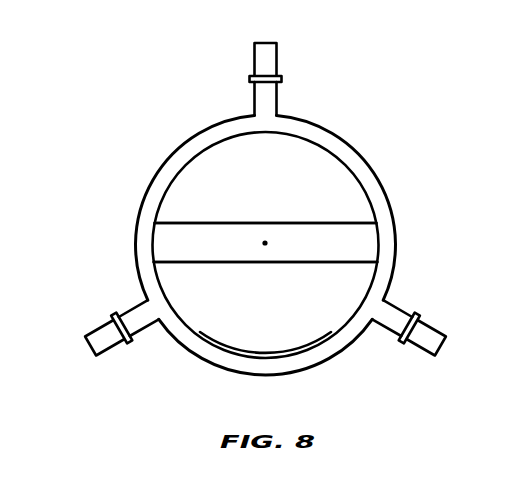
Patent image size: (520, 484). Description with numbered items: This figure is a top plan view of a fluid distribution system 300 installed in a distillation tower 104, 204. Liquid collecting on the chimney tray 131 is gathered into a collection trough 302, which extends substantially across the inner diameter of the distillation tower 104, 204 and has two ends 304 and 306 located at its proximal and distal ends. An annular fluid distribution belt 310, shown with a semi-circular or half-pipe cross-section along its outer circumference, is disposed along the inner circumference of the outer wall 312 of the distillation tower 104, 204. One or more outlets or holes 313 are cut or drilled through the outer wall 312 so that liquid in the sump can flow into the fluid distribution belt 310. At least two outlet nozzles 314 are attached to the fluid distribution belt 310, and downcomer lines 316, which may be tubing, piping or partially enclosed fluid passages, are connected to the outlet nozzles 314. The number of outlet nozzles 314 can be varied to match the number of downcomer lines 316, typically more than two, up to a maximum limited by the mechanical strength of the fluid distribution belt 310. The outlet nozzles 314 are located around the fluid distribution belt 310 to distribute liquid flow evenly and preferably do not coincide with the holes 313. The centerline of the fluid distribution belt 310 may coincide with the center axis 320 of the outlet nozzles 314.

The fluid distribution system 300 is at (111, 80).
The distillation tower 104 is at (301, 238).
The distillation tower 204 is at (333, 143).
The chimney tray 131 is at (276, 238).
The fluid distribution belt 310 is at (370, 165).
The collection trough 302 is at (198, 237).
The end of collection trough 304 is at (156, 248).
The end of collection trough 306 is at (266, 226).
The outer wall 312 is at (298, 353).
The outlets or holes 313 is at (152, 243).
The outlet nozzles 314 is at (253, 95).
The downcomer lines 316 is at (279, 53).
The center axis 320 is at (265, 243).